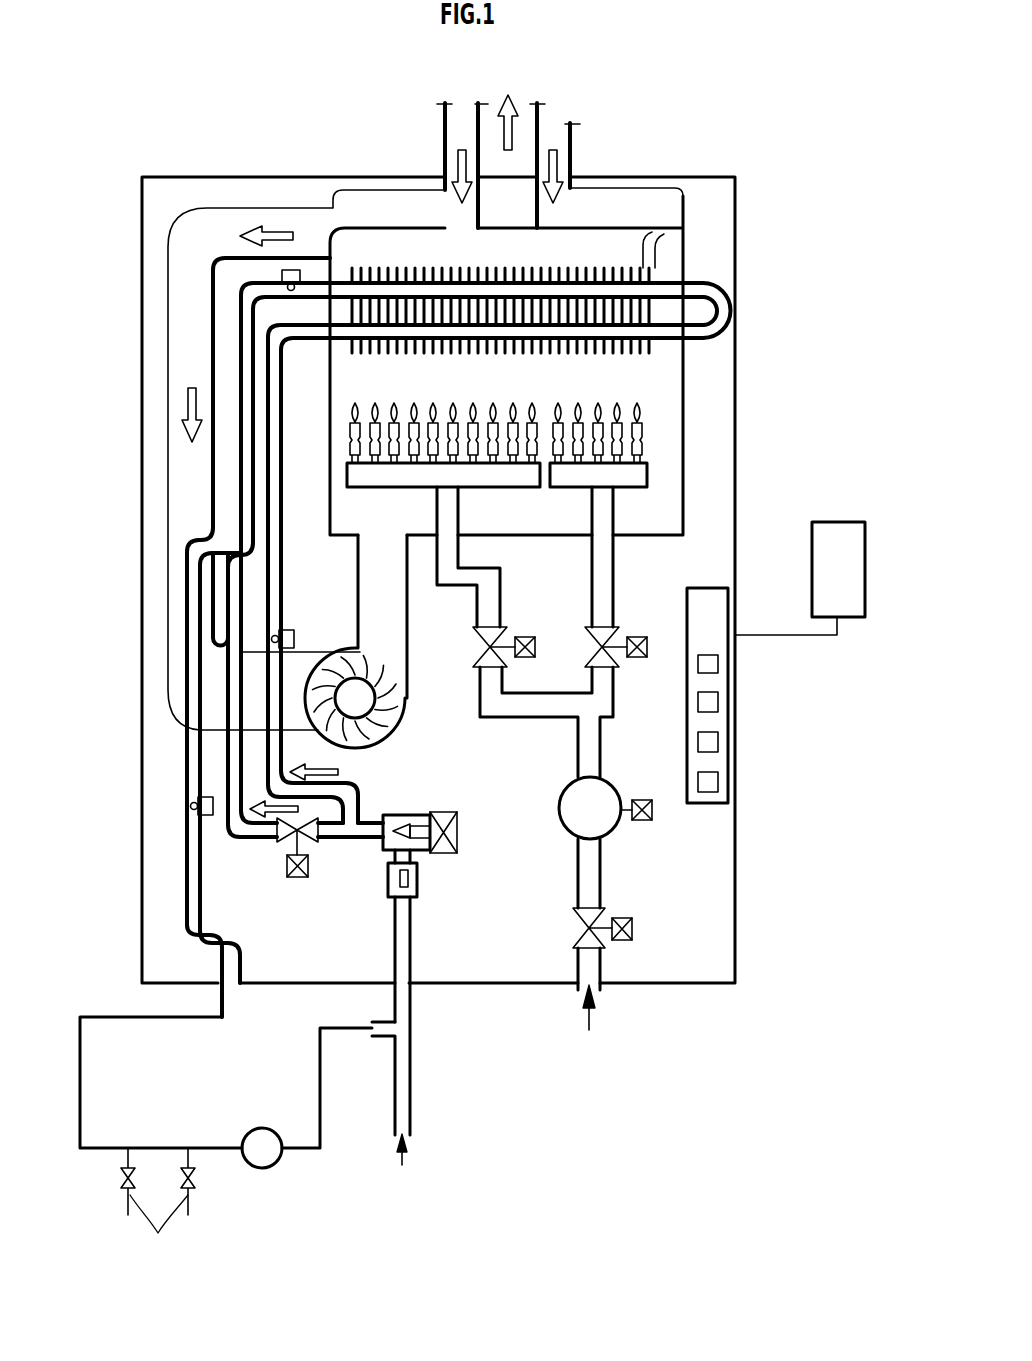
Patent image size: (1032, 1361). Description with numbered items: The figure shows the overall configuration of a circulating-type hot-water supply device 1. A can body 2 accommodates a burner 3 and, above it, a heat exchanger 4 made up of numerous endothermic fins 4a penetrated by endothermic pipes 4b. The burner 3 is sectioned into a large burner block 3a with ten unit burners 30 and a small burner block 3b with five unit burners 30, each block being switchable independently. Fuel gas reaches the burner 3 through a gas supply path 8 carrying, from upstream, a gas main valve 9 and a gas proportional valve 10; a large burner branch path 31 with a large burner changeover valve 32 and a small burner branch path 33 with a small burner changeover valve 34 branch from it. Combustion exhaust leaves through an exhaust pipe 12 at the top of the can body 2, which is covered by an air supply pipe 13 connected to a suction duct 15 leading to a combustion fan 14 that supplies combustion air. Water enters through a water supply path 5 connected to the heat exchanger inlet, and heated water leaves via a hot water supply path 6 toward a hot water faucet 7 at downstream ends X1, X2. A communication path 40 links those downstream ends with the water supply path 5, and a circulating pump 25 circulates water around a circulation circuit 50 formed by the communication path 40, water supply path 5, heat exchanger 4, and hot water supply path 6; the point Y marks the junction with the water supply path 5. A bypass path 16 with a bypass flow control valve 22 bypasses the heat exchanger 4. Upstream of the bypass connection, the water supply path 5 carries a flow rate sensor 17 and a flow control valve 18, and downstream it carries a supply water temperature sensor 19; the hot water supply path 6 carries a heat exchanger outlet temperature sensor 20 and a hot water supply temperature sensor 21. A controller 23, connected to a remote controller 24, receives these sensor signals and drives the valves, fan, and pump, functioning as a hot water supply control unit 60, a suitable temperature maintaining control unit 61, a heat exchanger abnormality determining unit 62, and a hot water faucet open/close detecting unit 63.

The circulating-type hot-water supply device 1 is at (735, 415).
The can body 2 is at (683, 500).
The burner 3 is at (502, 443).
The large burner block 3a is at (410, 478).
The small burner block 3b is at (585, 446).
The unit burner 30 is at (643, 428).
The heat exchanger 4 is at (479, 507).
The endothermic fins 4a is at (681, 250).
The endothermic pipes 4b is at (522, 288).
The water supply path 5 is at (278, 578).
The hot water supply path 6 is at (185, 762).
The hot water faucet 7 is at (159, 1231).
The gas supply path 8 is at (578, 865).
The gas main valve 9 is at (578, 922).
The gas proportional valve 10 is at (560, 812).
The exhaust pipe 12 is at (540, 113).
The air supply pipe 13 is at (445, 128).
The combustion fan 14 is at (372, 705).
The suction duct 15 is at (168, 340).
The bypass path 16 is at (245, 838).
The flow rate sensor 17 is at (418, 878).
The flow control valve 18 is at (402, 826).
The supply water temperature sensor 19 is at (295, 638).
The heat exchanger outlet temperature sensor 20 is at (293, 268).
The hot water supply temperature sensor 21 is at (200, 818).
The bypass flow control valve 22 is at (312, 840).
The controller 23 is at (713, 695).
The remote controller 24 is at (866, 553).
The circulating pump 25 is at (262, 1127).
The large burner branch path 31 is at (500, 592).
The large burner changeover valve 32 is at (478, 645).
The small burner branch path 33 is at (613, 583).
The small burner changeover valve 34 is at (590, 645).
The communication path 40 is at (320, 1083).
The circulation circuit 50 is at (170, 1082).
The hot water supply control unit 60 is at (718, 664).
The suitable temperature maintaining control unit 61 is at (718, 703).
The heat exchanger abnormality determining unit 62 is at (718, 742).
The hot water faucet open/close detecting unit 63 is at (718, 782).
The downstream end X1 is at (128, 1150).
The downstream end X2 is at (190, 1150).
The pipe junction Y is at (380, 1035).